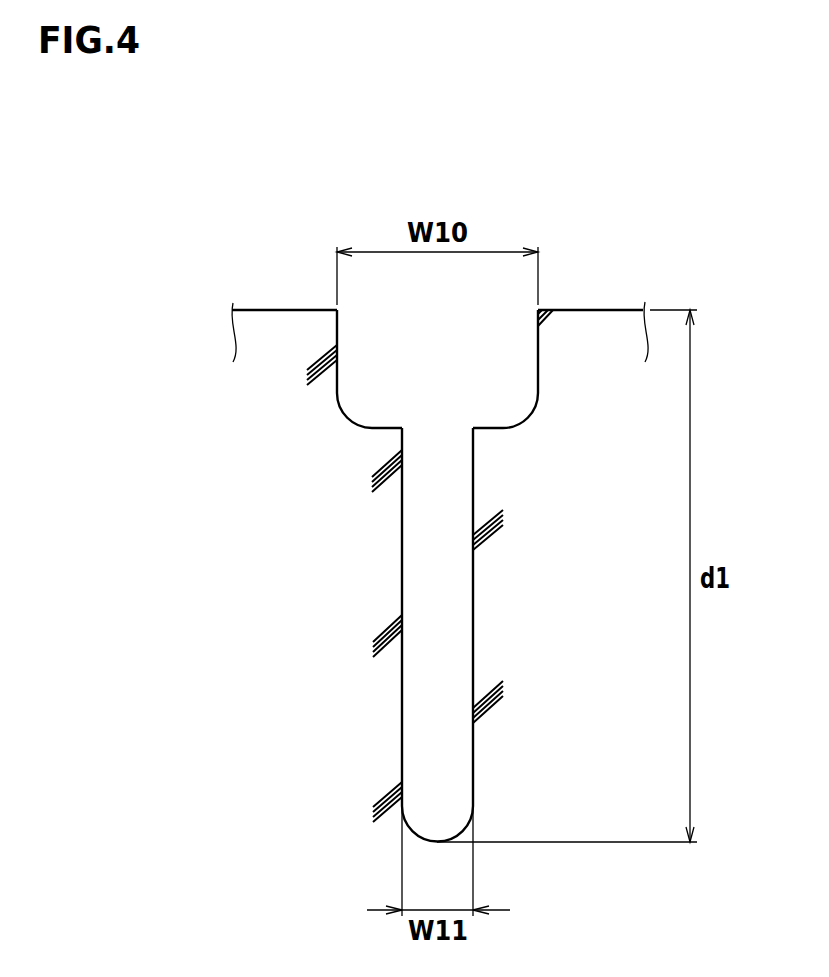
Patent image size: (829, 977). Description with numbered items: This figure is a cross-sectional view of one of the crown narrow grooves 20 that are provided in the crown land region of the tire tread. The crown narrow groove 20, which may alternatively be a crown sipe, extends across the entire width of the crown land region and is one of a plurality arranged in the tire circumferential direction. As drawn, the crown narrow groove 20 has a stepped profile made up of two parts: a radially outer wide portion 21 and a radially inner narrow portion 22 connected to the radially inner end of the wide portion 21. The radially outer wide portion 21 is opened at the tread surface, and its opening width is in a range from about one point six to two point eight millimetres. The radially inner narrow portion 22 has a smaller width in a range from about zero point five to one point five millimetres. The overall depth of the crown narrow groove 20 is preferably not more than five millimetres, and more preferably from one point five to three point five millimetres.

The crown narrow groove 20 is at (360, 576).
The radially outer wide portion 21 is at (397, 387).
The radially inner narrow portion 22 is at (435, 565).